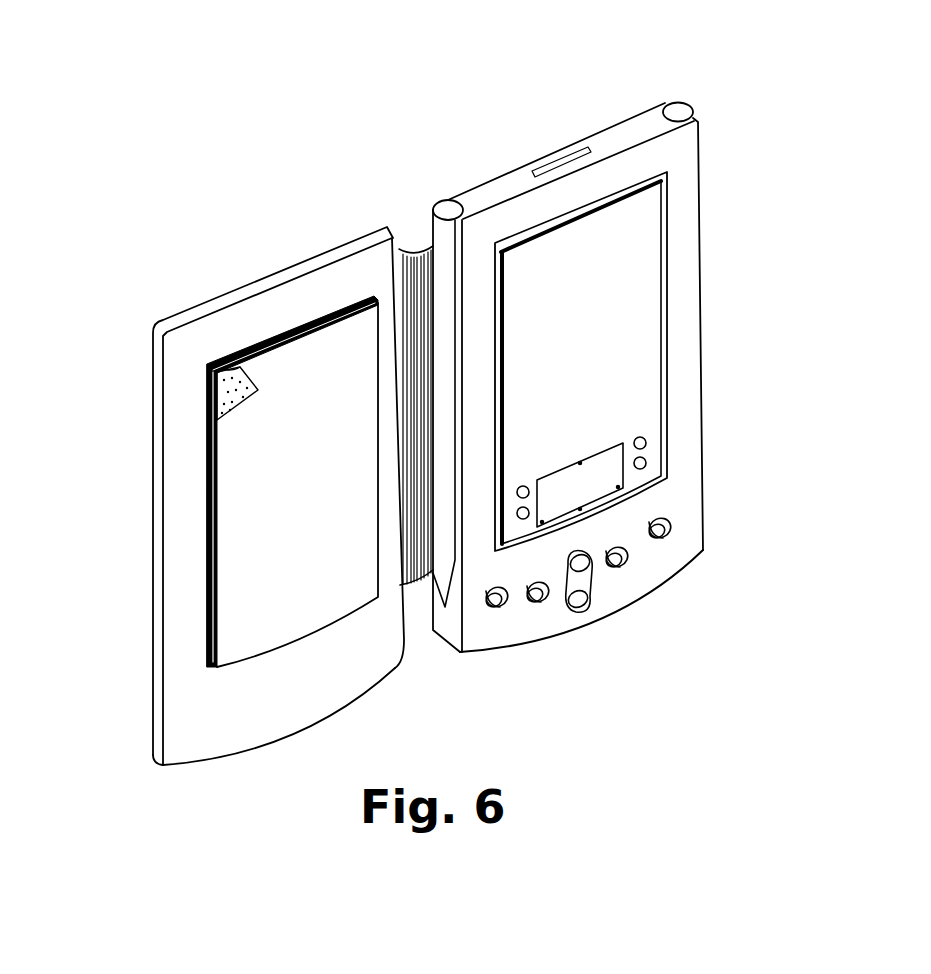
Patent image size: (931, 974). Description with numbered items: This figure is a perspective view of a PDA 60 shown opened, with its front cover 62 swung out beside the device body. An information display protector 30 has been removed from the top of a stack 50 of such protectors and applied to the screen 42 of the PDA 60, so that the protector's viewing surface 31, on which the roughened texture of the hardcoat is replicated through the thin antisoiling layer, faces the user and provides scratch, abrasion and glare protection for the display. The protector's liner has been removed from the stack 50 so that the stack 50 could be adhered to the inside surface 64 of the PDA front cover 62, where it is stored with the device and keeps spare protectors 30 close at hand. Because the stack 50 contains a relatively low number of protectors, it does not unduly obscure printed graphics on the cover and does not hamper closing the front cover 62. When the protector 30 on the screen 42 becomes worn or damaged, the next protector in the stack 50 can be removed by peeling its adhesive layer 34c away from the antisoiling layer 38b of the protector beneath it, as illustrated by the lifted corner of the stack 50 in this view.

The PDA 60 is at (421, 394).
The information display protector 30 is at (612, 378).
The viewing surface 31 is at (597, 308).
The screen 42 is at (633, 358).
The stack 50 is at (214, 432).
The antisoiling layer 38b is at (228, 372).
The adhesive layer 34c is at (240, 395).
The front cover 62 is at (242, 496).
The inside surface 64 is at (178, 637).